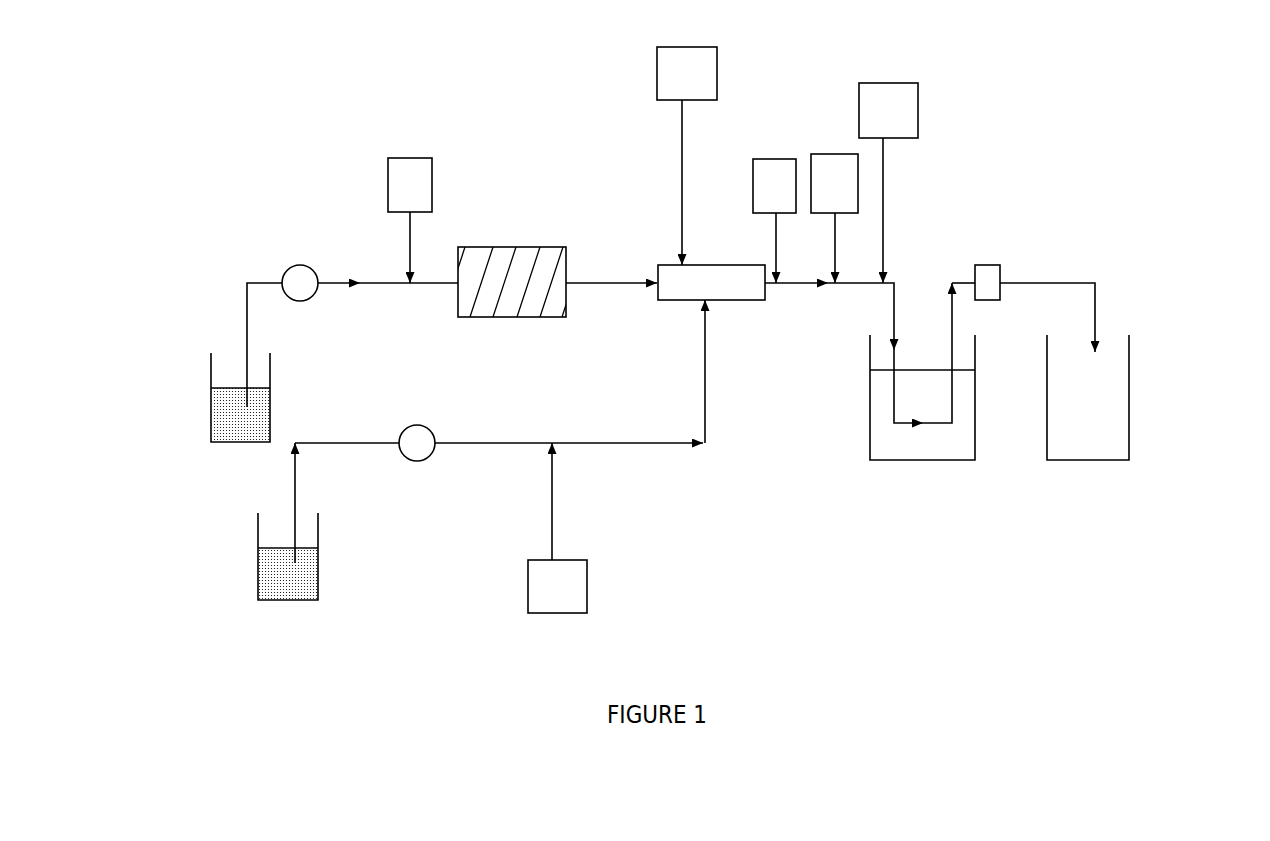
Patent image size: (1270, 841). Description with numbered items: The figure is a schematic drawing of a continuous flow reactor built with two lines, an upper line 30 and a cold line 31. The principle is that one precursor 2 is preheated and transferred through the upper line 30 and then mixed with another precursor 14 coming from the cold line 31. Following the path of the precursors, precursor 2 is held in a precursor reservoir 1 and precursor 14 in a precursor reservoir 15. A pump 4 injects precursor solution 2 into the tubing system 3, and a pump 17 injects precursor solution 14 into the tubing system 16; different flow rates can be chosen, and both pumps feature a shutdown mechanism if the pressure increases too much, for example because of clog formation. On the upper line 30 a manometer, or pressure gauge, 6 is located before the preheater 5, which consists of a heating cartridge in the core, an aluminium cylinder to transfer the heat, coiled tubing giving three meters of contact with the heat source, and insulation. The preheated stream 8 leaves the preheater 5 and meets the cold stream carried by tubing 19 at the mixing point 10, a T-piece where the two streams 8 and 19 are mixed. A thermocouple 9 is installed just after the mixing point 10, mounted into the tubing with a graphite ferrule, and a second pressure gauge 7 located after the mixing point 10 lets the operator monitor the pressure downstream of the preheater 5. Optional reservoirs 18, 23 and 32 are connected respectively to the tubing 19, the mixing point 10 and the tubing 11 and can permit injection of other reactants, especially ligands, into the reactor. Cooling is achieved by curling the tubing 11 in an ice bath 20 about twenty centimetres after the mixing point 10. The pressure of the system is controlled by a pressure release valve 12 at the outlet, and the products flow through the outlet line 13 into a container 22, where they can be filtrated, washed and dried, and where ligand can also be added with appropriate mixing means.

The precursor reservoir 1 is at (211, 370).
The precursor 2 is at (233, 423).
The tubing system 3 is at (246, 318).
The pump 4 is at (290, 262).
The preheater 5 is at (500, 247).
The pressure gauge 6 is at (388, 170).
The pressure gauge 7 is at (823, 154).
The stream 8 is at (620, 283).
The thermocouple 9 is at (783, 159).
The mixing point 10 is at (730, 300).
The tubing 11 is at (895, 315).
The pressure release valve 12 is at (1000, 265).
The outlet line 13 is at (1073, 283).
The precursor 14 is at (312, 600).
The precursor reservoir 15 is at (295, 583).
The tubing system 16 is at (297, 460).
The pump 17 is at (430, 457).
The optional reservoir 18 is at (557, 528).
The tubing 19 is at (652, 443).
The ice bath 20 is at (903, 460).
The container 22 is at (1129, 420).
The optional reservoir 23 is at (687, 156).
The upper line 30 is at (317, 192).
The cold line 31 is at (613, 548).
The optional reservoir 32 is at (888, 183).